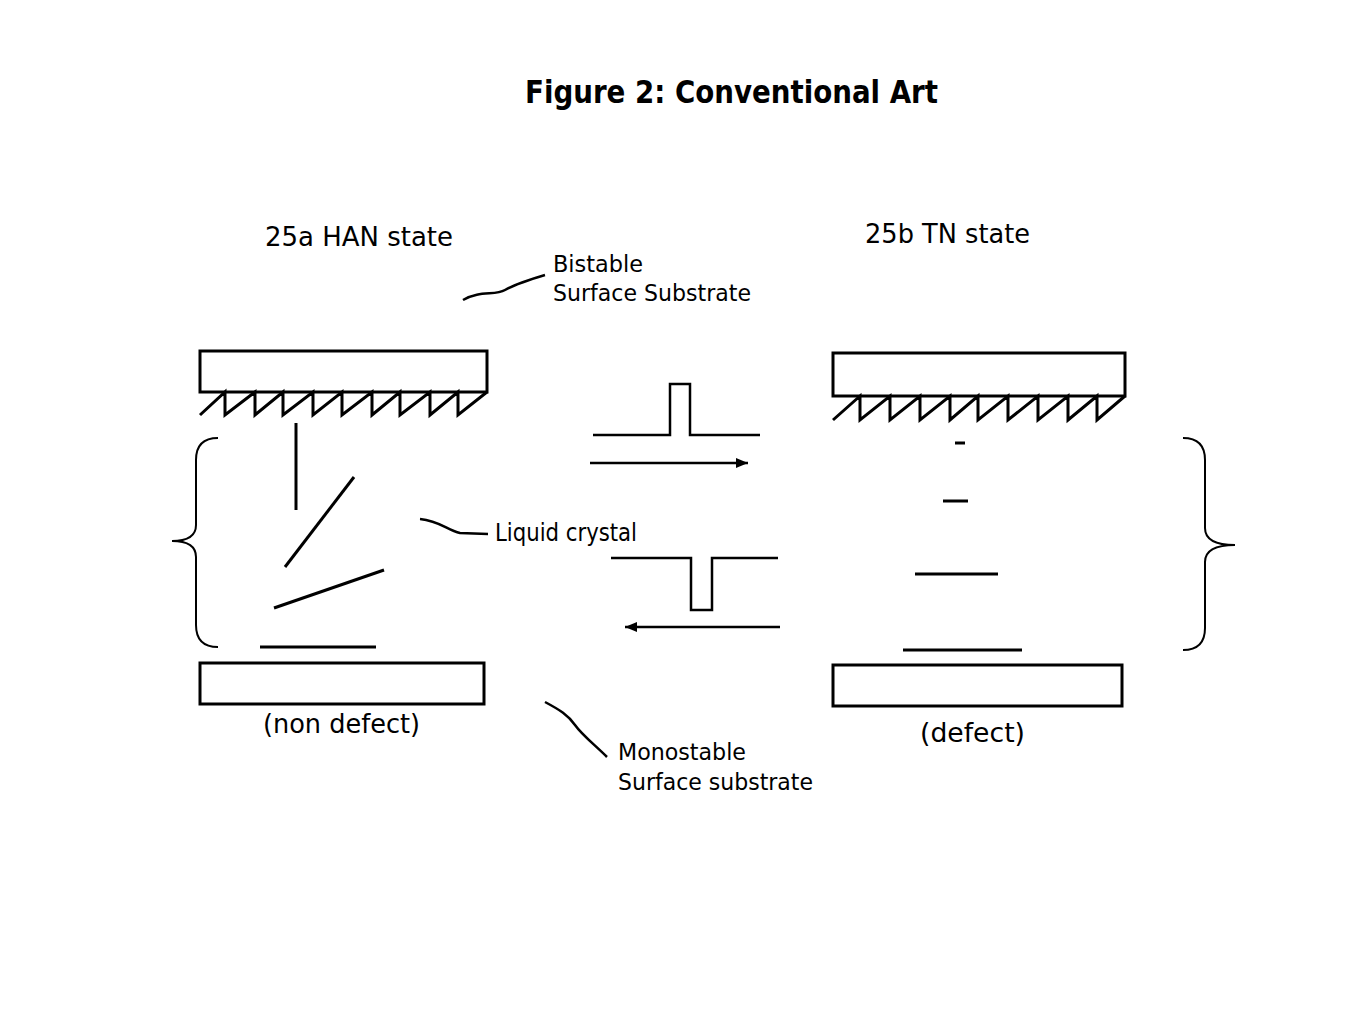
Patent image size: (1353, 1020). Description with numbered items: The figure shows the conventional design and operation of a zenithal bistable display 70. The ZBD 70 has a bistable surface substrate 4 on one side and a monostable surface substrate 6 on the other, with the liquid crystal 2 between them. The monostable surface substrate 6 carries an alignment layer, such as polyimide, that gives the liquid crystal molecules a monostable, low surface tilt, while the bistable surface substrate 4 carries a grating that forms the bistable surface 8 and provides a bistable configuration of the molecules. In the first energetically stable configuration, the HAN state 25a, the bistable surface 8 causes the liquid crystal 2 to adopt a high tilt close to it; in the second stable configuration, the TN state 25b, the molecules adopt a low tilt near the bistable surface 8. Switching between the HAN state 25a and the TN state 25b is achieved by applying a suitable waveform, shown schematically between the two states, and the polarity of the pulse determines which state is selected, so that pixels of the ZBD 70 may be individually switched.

The zenithal bistable display 70 is at (345, 330).
The bistable surface substrate 4 is at (428, 366).
The bistable surface 8 is at (478, 410).
The liquid crystal 2 is at (322, 522).
The monostable surface substrate 6 is at (477, 679).
The HAN state 25a is at (165, 542).
The TN state 25b is at (1238, 544).